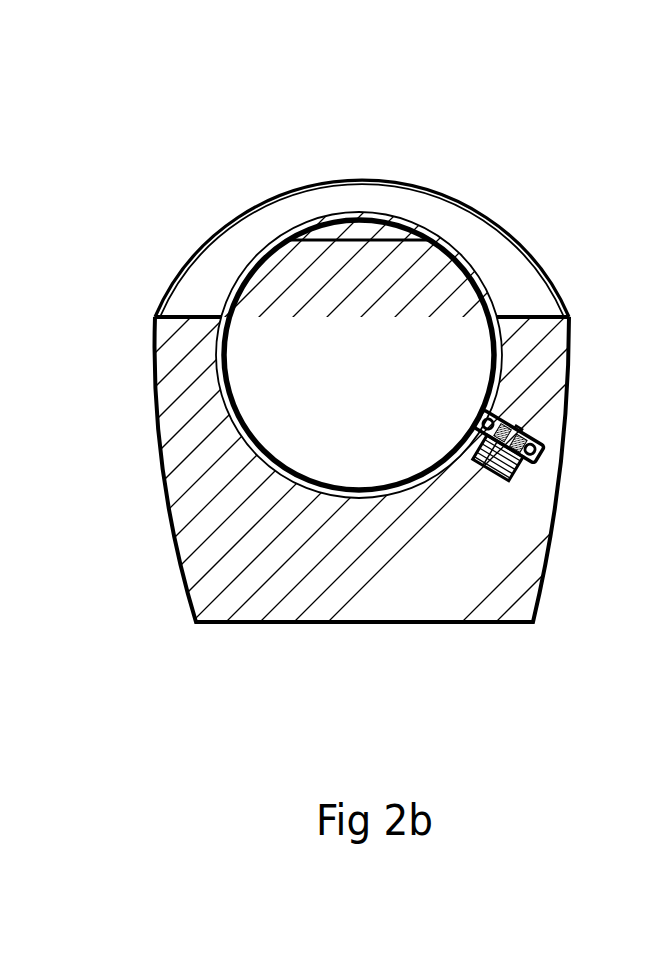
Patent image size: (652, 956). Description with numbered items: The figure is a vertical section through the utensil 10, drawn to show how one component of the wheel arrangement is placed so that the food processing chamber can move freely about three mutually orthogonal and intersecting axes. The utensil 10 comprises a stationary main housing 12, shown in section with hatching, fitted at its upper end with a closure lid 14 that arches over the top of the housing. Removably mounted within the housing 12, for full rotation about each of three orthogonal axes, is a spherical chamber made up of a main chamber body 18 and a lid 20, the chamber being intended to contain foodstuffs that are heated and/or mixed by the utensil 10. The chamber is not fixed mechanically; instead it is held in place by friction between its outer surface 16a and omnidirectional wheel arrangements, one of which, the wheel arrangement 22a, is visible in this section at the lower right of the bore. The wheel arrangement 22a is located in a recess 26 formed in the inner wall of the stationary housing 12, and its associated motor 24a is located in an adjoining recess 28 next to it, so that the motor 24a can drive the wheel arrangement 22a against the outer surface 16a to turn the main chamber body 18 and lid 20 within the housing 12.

The utensil 10 is at (326, 478).
The stationary main housing 12 is at (512, 592).
The closure lid 14 is at (506, 222).
The outer surface 16a is at (493, 292).
The main chamber body 18 is at (235, 362).
The lid 20 is at (360, 214).
The omnidirectional wheel arrangement 22a is at (508, 412).
The motor 24a is at (500, 455).
The recess 26 is at (540, 448).
The adjoining recess 28 is at (512, 470).